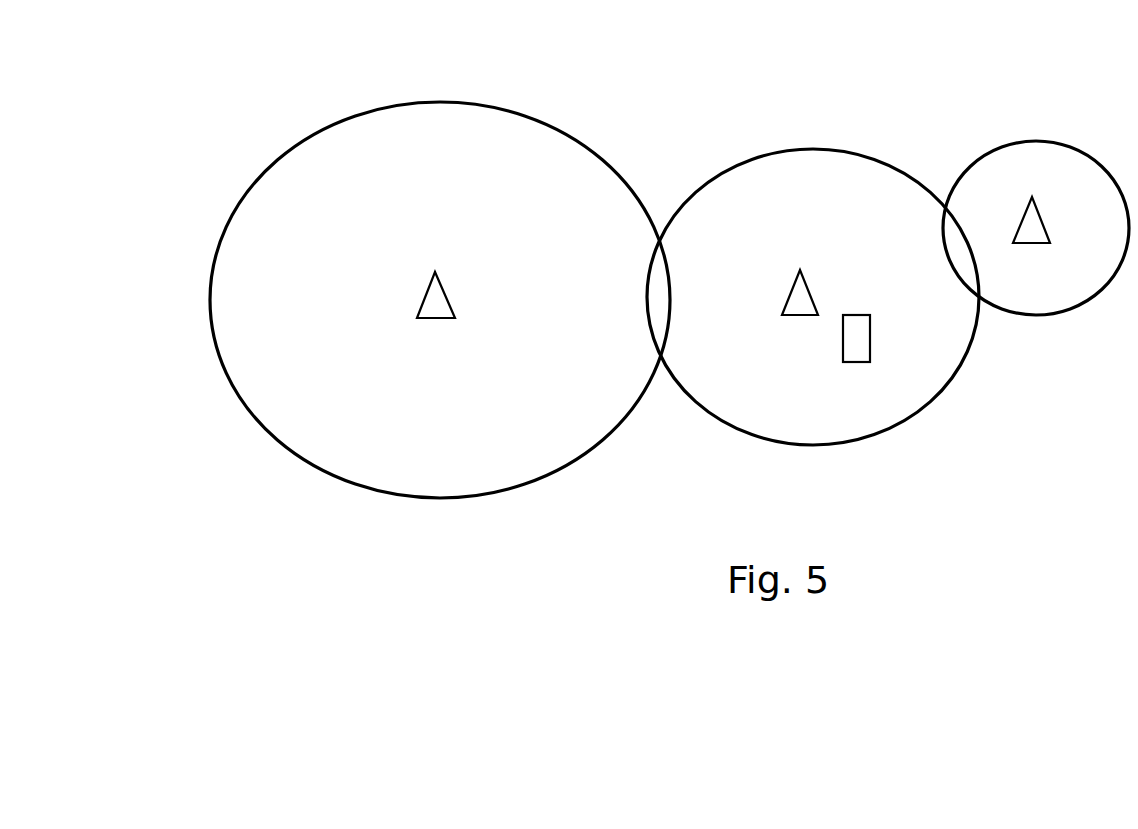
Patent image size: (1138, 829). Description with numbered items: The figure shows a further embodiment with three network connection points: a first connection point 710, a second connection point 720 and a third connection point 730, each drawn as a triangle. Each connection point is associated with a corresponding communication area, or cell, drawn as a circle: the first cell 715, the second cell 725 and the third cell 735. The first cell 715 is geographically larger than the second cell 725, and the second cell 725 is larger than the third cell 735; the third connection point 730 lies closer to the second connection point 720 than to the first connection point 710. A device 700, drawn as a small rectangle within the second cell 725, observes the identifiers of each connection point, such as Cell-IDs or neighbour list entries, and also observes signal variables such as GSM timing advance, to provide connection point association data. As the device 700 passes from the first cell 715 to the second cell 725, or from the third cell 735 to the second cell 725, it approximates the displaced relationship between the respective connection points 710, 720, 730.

The device 700 is at (853, 338).
The first network connection point 710 is at (440, 283).
The first cell 715 is at (415, 173).
The second network connection point 720 is at (797, 290).
The second cell 725 is at (773, 225).
The third network connection point 730 is at (1035, 223).
The third cell 735 is at (1013, 177).